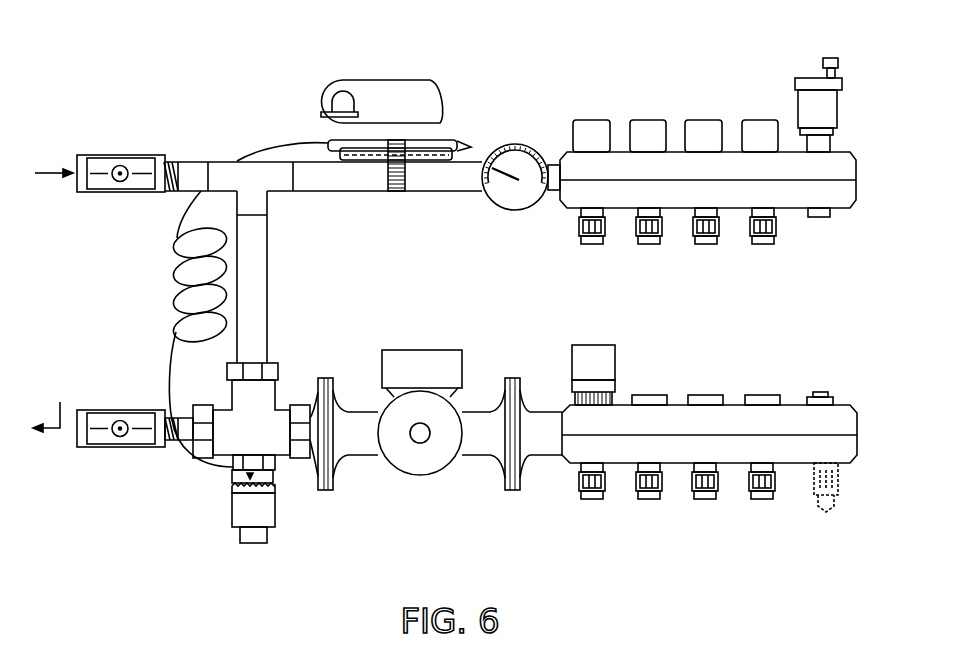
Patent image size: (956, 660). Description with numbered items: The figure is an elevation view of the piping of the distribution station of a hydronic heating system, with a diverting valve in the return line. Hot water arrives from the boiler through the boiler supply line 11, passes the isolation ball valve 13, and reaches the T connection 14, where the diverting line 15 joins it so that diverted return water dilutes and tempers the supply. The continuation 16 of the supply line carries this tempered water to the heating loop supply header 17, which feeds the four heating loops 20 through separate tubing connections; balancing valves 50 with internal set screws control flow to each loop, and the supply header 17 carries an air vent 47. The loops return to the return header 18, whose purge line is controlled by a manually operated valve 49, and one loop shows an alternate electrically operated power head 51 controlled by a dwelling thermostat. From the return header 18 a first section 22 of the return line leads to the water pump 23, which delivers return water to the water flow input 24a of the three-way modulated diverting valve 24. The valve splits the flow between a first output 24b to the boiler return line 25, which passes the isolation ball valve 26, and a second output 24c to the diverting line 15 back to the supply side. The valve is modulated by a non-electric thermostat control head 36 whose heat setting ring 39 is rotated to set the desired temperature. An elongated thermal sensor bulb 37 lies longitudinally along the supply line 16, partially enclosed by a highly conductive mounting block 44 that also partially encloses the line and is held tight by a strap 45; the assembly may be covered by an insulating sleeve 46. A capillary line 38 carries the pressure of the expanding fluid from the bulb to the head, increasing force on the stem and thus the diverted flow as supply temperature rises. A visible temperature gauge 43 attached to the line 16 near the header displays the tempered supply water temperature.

The boiler supply line 11 is at (56, 180).
The isolation ball valve 13 is at (120, 155).
The T connection 14 is at (220, 161).
The diverting line 15 is at (268, 287).
The continuation of supply line 16 is at (478, 162).
The heating loop supply header 17 is at (853, 200).
The return header 18 is at (859, 410).
The heating loops 20 is at (701, 320).
The first section of return line 22 is at (542, 412).
The water pump 23 is at (410, 350).
The three-way modulated diverting valve 24 is at (275, 457).
The water flow input 24a is at (293, 390).
The first water flow output 24b is at (207, 484).
The second water flow output 24c is at (217, 391).
The boiler return line 25 is at (53, 405).
The isolation ball valve 26 is at (113, 410).
The thermostat control head 36 is at (275, 518).
The thermal sensor bulb 37 is at (330, 141).
The capillary line 38 is at (177, 243).
The control head heat setting ring 39 is at (275, 487).
The temperature gauge 43 is at (512, 212).
The mounting block 44 is at (343, 156).
The strap 45 is at (388, 176).
The insulating sleeve 46 is at (358, 81).
The air vent 47 is at (838, 100).
The manually operated valve 49 is at (758, 120).
The balancing valve 50 is at (583, 120).
The electrically operated power head 51 is at (617, 354).